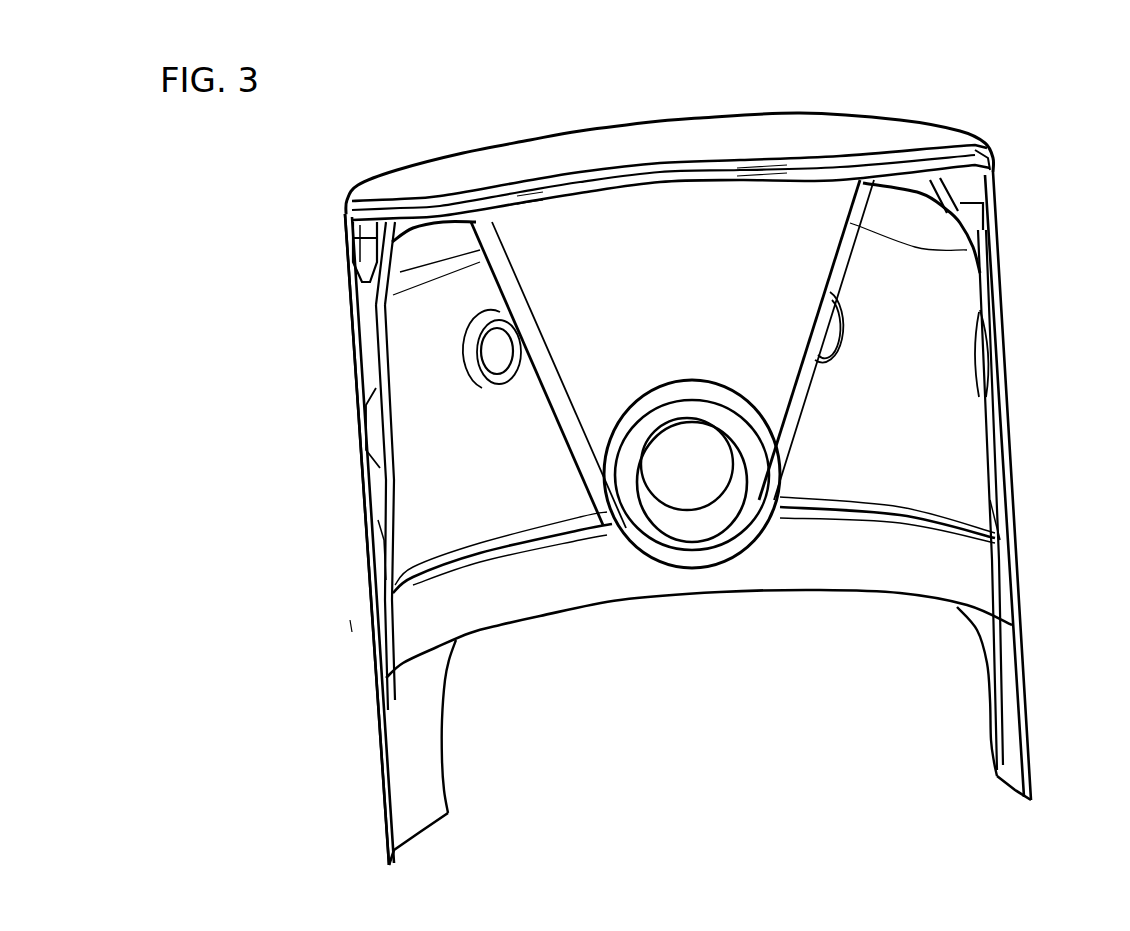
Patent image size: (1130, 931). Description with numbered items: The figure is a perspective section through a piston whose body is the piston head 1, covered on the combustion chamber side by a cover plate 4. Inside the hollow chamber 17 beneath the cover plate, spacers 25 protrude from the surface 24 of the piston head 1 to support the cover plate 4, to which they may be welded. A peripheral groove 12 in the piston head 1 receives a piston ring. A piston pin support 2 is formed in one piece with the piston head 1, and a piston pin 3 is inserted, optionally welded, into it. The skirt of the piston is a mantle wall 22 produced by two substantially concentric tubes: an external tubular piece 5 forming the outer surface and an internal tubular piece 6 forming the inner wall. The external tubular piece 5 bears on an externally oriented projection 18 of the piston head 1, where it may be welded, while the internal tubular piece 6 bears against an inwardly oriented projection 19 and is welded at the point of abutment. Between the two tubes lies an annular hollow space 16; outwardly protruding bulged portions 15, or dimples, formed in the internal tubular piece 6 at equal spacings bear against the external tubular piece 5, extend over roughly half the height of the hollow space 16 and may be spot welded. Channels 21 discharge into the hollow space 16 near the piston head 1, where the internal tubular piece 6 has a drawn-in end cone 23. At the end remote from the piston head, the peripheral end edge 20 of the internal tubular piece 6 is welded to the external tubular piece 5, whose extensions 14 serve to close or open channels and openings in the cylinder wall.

The piston head 1 is at (905, 88).
The piston pin support 2 is at (780, 387).
The piston pin 3 is at (747, 520).
The cover plate 4 is at (557, 153).
The external tubular piece 5 is at (373, 742).
The internal tubular piece 6 is at (390, 632).
The peripheral groove 12 is at (983, 177).
The extensions 14 is at (430, 803).
The bulged portions 15 is at (493, 383).
The hollow space 16 is at (373, 527).
The hollow chamber 17 is at (647, 173).
The externally oriented projection 18 is at (347, 270).
The inwardly oriented projection 19 is at (487, 247).
The end edge 20 is at (420, 667).
The channels 21 is at (983, 140).
The mantle wall 22 is at (338, 629).
The end cone 23 is at (387, 297).
The surface 24 is at (503, 190).
The spacers 25 is at (753, 173).